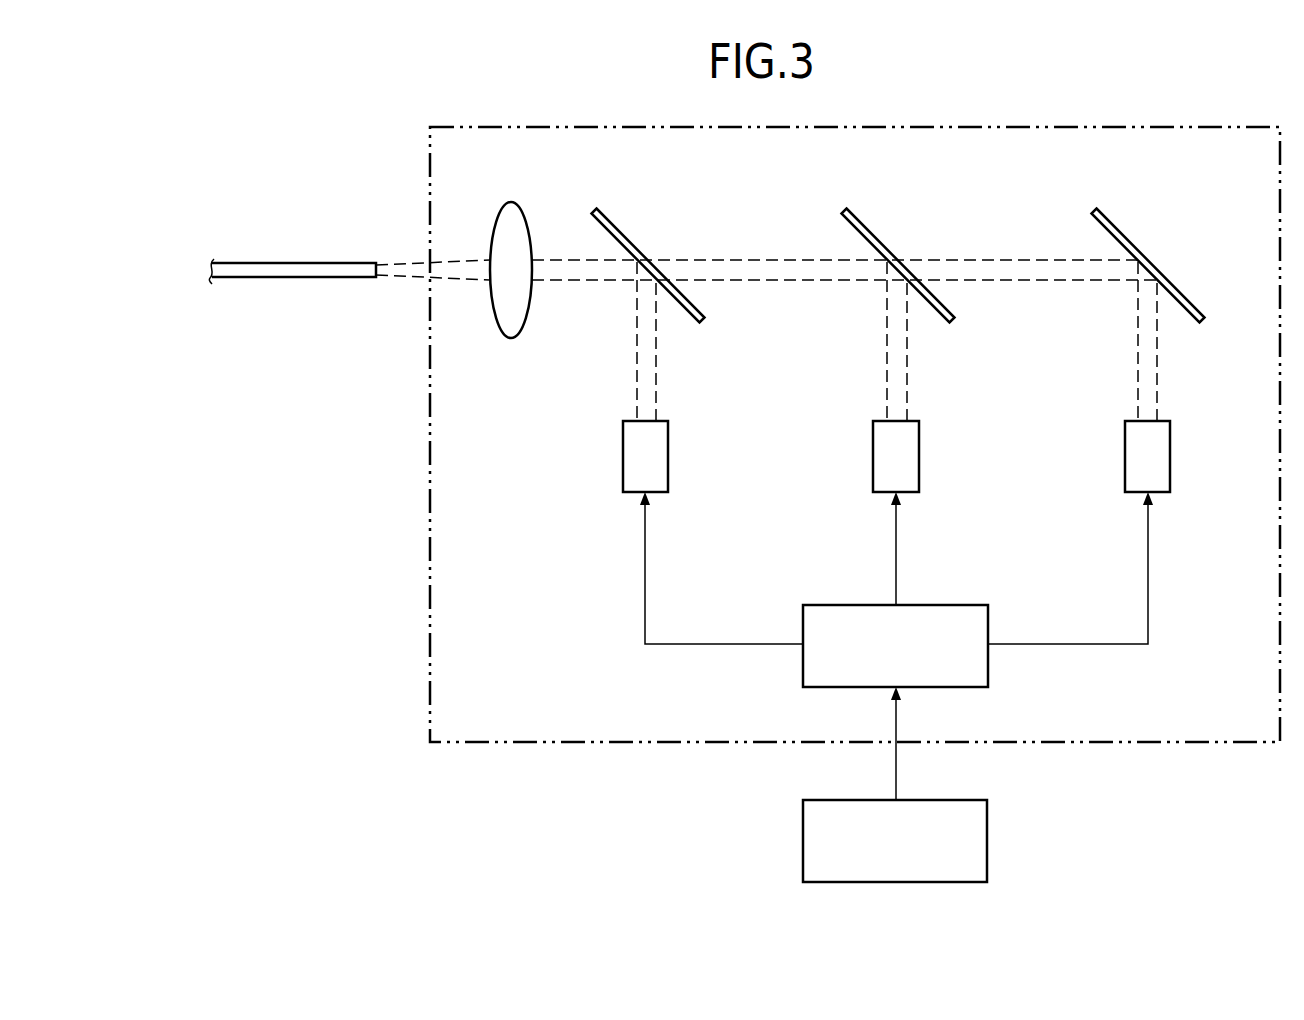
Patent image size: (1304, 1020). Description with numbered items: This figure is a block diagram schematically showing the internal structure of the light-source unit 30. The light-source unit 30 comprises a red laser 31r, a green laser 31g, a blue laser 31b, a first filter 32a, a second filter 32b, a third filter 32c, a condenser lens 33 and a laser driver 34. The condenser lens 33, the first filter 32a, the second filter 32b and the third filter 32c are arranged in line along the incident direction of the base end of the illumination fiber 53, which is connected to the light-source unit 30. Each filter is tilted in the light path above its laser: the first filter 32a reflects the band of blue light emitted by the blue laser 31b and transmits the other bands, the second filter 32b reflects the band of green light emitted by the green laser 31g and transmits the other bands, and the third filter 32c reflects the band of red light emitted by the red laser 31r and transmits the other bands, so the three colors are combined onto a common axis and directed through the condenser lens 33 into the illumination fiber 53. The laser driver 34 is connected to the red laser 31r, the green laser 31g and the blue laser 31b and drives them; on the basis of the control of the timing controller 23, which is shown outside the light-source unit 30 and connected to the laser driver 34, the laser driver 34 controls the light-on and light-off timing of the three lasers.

The light-source unit 30 is at (428, 622).
The illumination fiber 53 is at (296, 262).
The condenser lens 33 is at (511, 202).
The first filter 32a is at (630, 246).
The second filter 32b is at (878, 246).
The third filter 32c is at (1130, 246).
The blue laser 31b is at (669, 452).
The green laser 31g is at (920, 452).
The red laser 31r is at (1171, 452).
The laser driver 34 is at (989, 665).
The timing controller 23 is at (988, 833).